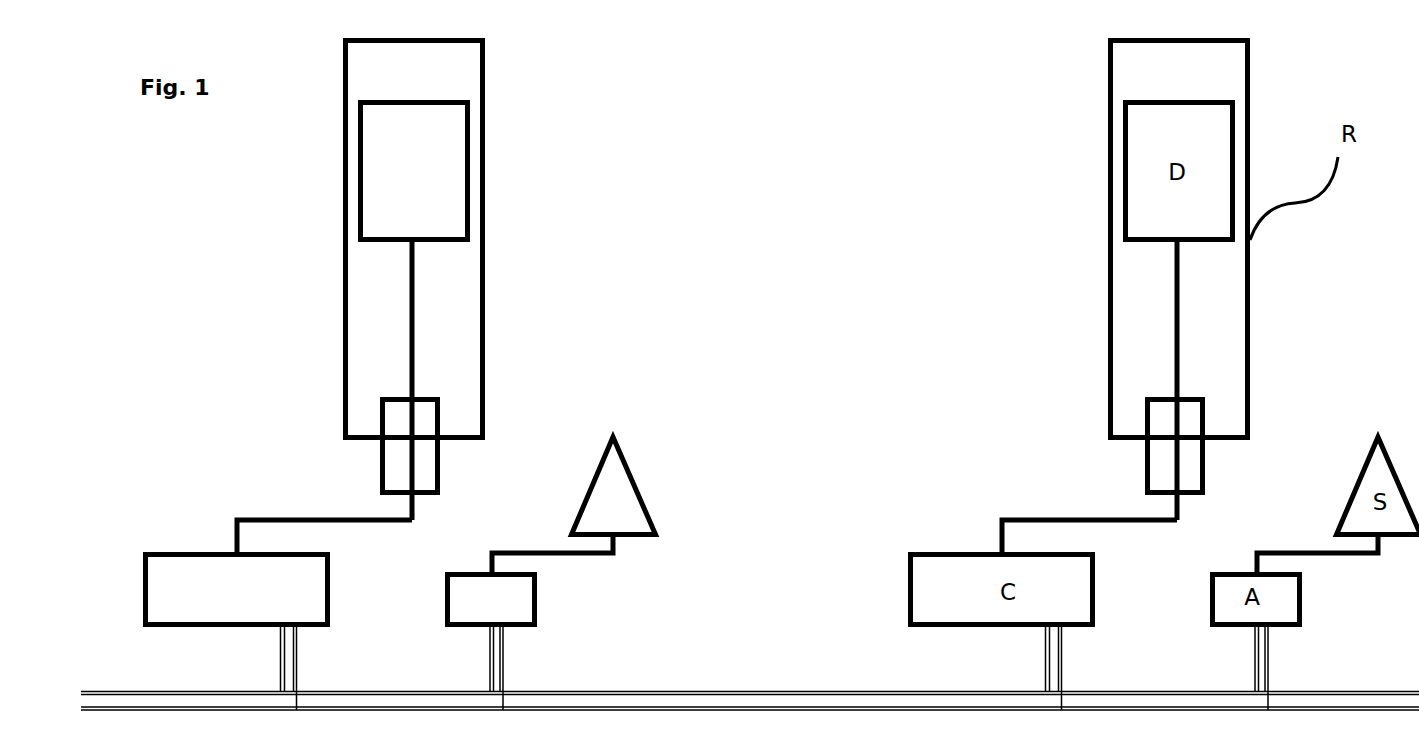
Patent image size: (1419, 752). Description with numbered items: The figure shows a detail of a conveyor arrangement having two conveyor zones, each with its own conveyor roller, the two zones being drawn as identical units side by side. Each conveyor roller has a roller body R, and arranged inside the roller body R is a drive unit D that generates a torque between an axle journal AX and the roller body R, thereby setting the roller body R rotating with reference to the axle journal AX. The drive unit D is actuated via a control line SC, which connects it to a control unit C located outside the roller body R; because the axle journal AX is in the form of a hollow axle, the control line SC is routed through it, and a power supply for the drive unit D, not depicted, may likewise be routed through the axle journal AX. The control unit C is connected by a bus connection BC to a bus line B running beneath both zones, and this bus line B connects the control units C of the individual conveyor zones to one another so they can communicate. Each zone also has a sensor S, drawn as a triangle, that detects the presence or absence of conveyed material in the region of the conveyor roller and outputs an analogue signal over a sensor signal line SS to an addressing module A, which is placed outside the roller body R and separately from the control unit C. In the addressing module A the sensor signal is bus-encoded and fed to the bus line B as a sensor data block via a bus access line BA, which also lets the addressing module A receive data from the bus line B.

The roller body R is at (485, 232).
The drive unit D is at (414, 171).
The axle journal AX is at (440, 478).
The control line SC is at (352, 520).
The control unit C is at (237, 590).
The bus connection BC is at (297, 672).
The addressing module A is at (491, 600).
The bus access line BA is at (503, 667).
The sensor S is at (614, 486).
The sensor signal line SS is at (563, 549).
The bus line B is at (668, 690).